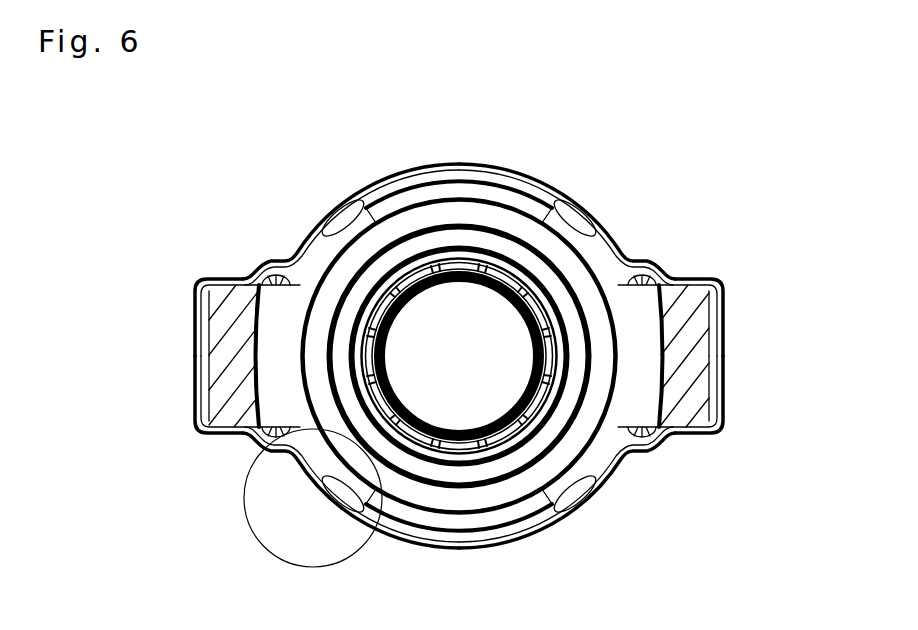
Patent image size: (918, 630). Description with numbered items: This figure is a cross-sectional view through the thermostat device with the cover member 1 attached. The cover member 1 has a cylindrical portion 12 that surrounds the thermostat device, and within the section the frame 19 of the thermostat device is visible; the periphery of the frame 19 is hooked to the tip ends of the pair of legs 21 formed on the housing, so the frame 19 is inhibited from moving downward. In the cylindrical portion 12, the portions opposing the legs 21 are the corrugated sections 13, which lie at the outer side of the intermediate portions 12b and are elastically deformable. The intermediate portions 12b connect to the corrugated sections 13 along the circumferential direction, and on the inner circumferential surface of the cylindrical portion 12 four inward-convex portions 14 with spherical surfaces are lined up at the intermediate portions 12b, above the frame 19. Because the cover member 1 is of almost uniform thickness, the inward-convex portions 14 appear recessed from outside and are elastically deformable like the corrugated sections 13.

The cover member 1 is at (362, 181).
The cylindrical portion 12 is at (459, 369).
The intermediate portion 12b is at (505, 165).
The corrugated section 13 is at (196, 358).
The inward-convex portion 14 is at (318, 223).
The frame 19 is at (585, 250).
The leg 21 is at (197, 430).